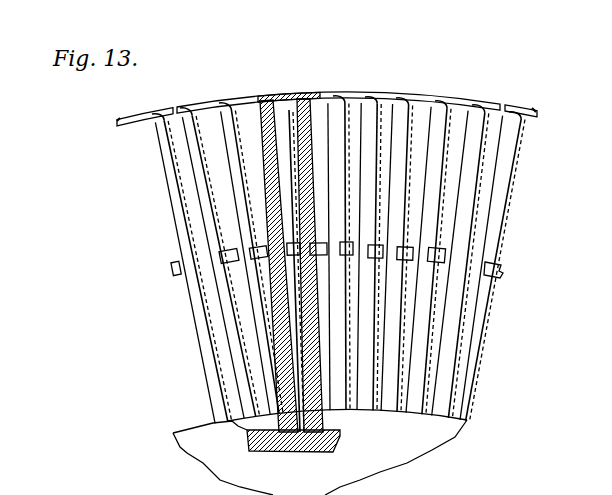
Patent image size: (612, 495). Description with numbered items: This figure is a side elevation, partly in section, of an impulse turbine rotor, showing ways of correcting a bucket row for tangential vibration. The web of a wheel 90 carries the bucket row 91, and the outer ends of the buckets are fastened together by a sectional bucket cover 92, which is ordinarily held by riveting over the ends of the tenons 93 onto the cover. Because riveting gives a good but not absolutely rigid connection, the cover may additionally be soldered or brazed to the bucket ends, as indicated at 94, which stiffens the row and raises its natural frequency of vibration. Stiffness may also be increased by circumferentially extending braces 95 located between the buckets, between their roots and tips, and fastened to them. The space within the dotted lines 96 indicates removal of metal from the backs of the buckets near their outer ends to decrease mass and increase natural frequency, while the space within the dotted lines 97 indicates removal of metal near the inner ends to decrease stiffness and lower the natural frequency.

The web of a wheel 90 is at (411, 462).
The bucket row 91 is at (474, 362).
The bucket cover 92 is at (460, 101).
The tenons 93 is at (380, 96).
The soldering or brazing 94 is at (317, 93).
The braces 95 is at (445, 257).
The dotted lines indicating removal of metal 96 is at (233, 106).
The dotted lines indicating removal of metal 97 is at (250, 383).